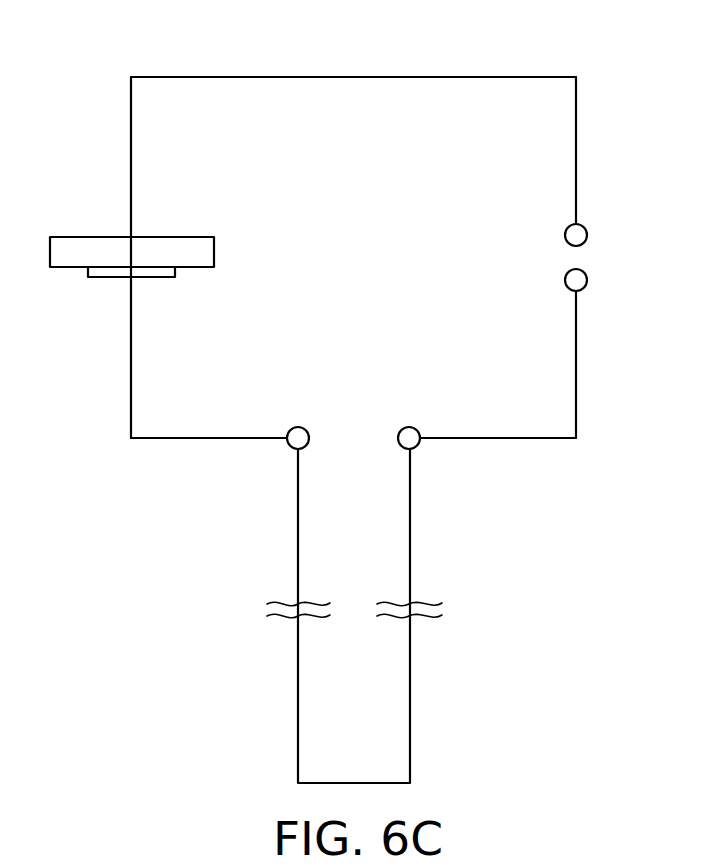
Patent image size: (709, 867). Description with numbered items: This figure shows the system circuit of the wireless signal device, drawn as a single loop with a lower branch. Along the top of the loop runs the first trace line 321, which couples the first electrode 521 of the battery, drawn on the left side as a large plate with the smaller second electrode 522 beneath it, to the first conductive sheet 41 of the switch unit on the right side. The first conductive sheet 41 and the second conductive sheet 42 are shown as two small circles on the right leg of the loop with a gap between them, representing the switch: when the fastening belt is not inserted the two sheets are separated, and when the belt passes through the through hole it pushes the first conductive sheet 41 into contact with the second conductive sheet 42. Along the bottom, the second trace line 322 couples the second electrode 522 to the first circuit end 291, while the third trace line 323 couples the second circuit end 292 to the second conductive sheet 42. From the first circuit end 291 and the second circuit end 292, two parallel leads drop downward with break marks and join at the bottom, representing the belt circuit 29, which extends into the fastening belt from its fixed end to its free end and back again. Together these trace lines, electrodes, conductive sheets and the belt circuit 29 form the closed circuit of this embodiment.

The first trace line 321 is at (402, 77).
The second trace line 322 is at (180, 440).
The third trace line 323 is at (527, 440).
The first electrode 521 is at (68, 237).
The second electrode 522 is at (105, 280).
The first conductive sheet 41 is at (578, 235).
The second conductive sheet 42 is at (578, 280).
The first circuit end 291 is at (299, 437).
The second circuit end 292 is at (410, 437).
The belt circuit 29 is at (412, 712).